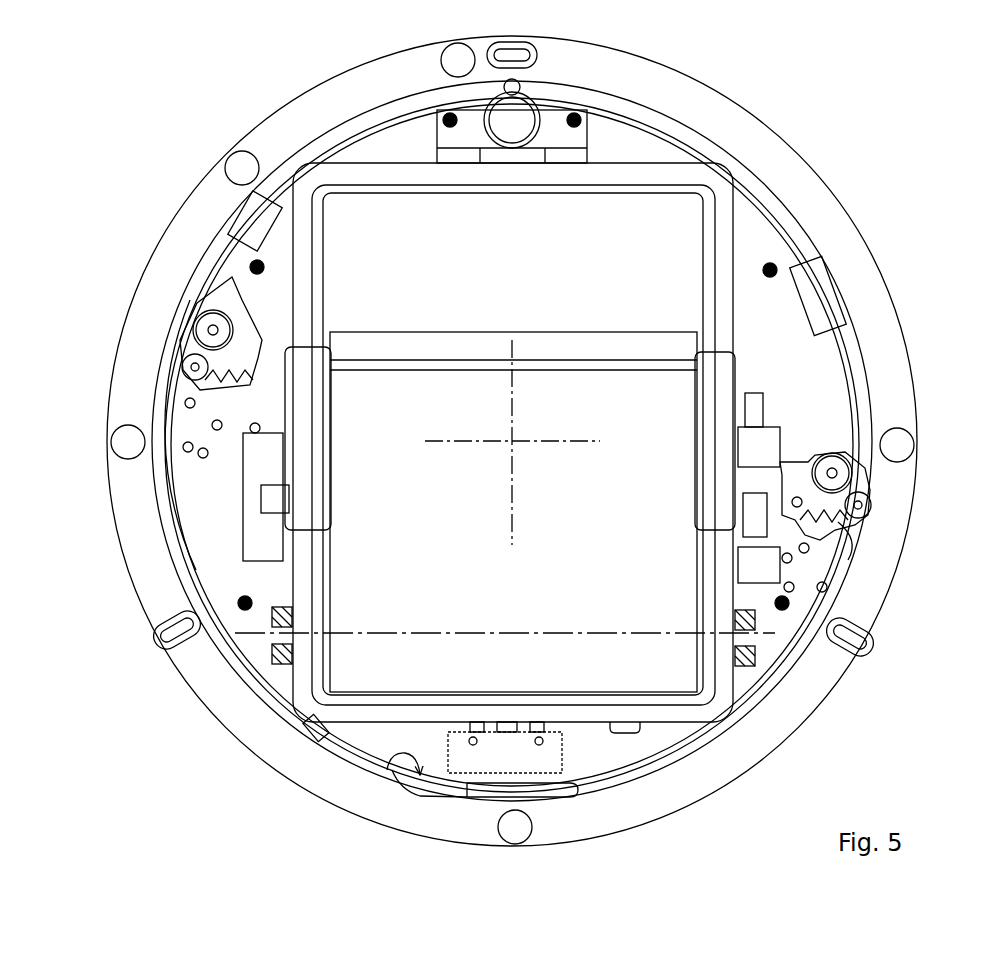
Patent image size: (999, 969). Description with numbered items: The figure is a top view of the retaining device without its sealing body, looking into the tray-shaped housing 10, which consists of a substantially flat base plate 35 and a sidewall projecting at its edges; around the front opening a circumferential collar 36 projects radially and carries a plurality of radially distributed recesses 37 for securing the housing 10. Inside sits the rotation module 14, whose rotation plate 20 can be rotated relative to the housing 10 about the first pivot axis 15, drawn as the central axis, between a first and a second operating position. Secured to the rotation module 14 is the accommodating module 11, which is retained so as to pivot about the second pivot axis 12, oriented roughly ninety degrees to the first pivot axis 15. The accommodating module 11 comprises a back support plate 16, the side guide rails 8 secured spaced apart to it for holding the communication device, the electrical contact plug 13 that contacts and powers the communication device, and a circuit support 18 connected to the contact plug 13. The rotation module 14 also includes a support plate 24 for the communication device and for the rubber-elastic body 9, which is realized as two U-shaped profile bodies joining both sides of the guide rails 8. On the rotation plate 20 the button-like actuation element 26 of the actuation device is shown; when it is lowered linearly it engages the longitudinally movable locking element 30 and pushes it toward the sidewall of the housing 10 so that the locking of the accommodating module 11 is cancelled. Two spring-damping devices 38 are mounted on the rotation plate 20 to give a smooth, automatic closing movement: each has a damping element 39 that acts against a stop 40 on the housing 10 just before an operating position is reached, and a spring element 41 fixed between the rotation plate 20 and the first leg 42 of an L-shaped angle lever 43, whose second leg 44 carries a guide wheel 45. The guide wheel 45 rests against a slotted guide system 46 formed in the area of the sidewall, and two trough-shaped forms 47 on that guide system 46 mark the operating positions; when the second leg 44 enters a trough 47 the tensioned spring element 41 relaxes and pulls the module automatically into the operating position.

The side guide rails 8 is at (320, 490).
The rubber-elastic body 9 is at (712, 184).
The housing 10 is at (852, 214).
The accommodating module 11 is at (600, 734).
The second pivot axis 12 is at (392, 633).
The electrical contact plug 13 is at (512, 742).
The rotation module 14 is at (270, 668).
The first pivot axis 15 is at (506, 452).
The back support plate 16 is at (513, 512).
The circuit support 18 is at (467, 758).
The rotation plate 20 is at (200, 556).
The support plate 24 is at (513, 445).
The actuation element 26 is at (510, 122).
The locking element 30 is at (560, 160).
The base plate 35 is at (652, 148).
The circumferential collar 36 is at (888, 356).
The recesses 37 is at (168, 655).
The spring-damping device 38 is at (158, 290).
The damping element 39 is at (250, 240).
The stop 40 is at (876, 322).
The spring element 41 is at (270, 362).
The first leg 42 is at (238, 298).
The angle lever 43 is at (195, 330).
The second leg 44 is at (183, 366).
The guide wheel 45 is at (212, 380).
The slotted guide system 46 is at (190, 532).
The trough-shaped forms 47 is at (378, 778).